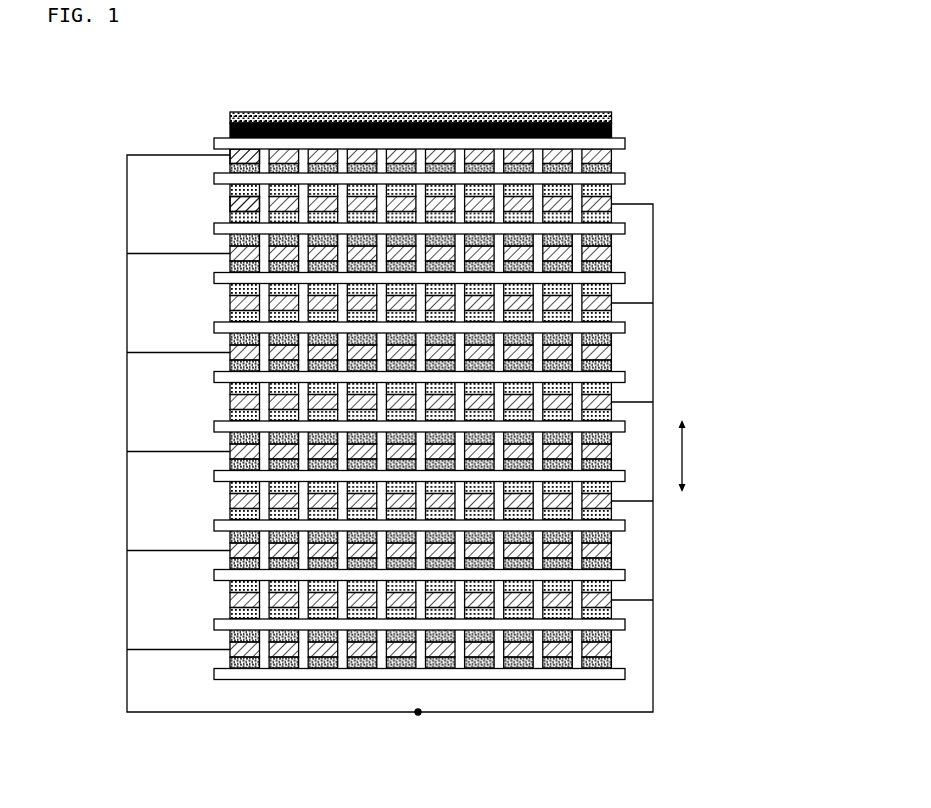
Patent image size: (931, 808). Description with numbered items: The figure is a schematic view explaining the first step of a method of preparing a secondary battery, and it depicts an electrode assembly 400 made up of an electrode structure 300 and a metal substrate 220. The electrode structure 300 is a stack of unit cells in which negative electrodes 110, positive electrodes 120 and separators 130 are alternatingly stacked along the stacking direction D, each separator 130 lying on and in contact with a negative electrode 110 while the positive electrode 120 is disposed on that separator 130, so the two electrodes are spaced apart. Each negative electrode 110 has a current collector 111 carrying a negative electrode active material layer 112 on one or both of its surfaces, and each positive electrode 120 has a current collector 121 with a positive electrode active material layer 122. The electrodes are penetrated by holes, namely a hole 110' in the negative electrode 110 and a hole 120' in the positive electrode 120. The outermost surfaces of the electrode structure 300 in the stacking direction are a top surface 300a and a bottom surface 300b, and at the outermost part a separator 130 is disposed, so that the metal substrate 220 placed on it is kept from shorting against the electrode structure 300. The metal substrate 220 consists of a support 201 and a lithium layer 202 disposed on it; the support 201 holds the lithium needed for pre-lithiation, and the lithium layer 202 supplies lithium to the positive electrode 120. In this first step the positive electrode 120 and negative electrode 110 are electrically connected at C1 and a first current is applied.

The hole 110' is at (261, 114).
The hole 120' is at (284, 140).
The support 201 is at (612, 118).
The lithium layer 202 is at (612, 129).
The metal substrate 220 is at (482, 123).
The current collector 111 is at (612, 155).
The negative electrode active material layer 112 is at (612, 167).
The negative electrode 110 is at (482, 159).
The current collector 121 is at (612, 195).
The positive electrode active material layer 122 is at (613, 213).
The positive electrode 120 is at (482, 201).
The separator 130 is at (625, 231).
The top surface 300a is at (208, 137).
The bottom surface 300b is at (208, 678).
The electrode structure 300 is at (467, 405).
The electrode assembly 400 is at (489, 400).
The stacking direction D is at (691, 456).
The electrical connection C1 is at (419, 723).